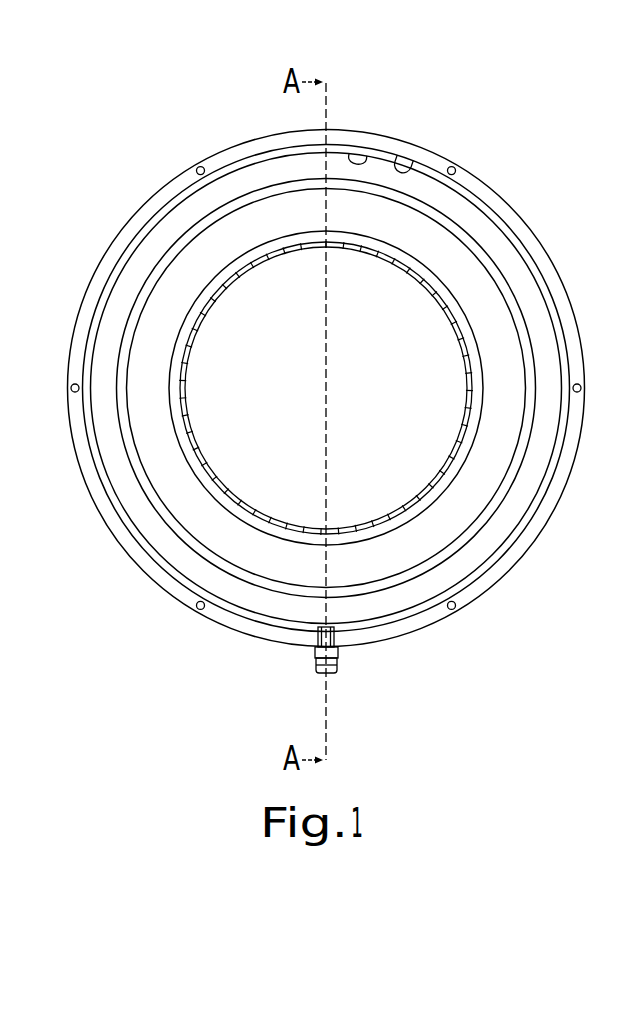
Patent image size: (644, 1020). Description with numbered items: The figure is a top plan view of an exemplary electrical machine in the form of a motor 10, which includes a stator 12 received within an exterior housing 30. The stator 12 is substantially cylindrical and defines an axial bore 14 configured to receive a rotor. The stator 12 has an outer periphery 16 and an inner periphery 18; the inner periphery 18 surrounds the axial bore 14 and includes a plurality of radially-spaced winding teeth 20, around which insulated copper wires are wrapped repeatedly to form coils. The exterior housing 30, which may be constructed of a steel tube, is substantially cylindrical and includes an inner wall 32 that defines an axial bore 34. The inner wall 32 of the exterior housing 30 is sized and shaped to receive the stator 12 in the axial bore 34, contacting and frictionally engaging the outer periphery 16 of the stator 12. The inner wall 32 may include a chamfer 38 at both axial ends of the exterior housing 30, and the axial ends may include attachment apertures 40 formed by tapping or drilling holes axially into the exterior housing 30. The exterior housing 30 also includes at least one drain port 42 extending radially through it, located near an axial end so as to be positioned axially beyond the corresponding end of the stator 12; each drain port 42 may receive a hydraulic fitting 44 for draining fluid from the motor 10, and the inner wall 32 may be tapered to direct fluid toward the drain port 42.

The motor 10 is at (534, 111).
The stator 12 is at (500, 353).
The axial bore 14 is at (258, 442).
The outer periphery 16 is at (405, 172).
The inner periphery 18 is at (184, 372).
The winding teeth 20 is at (214, 300).
The exterior housing 30 is at (522, 233).
The inner wall 32 is at (370, 153).
The axial bore 34 is at (464, 217).
The chamfer 38 is at (550, 303).
The attachment apertures 40 is at (200, 613).
The drain port 42 is at (341, 672).
The hydraulic fitting 44 is at (315, 663).